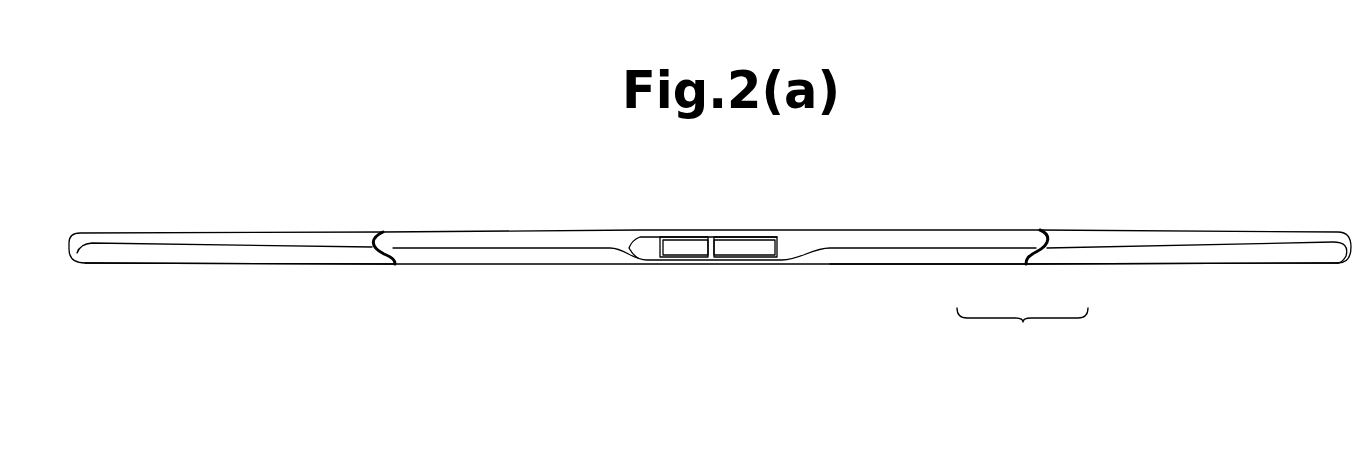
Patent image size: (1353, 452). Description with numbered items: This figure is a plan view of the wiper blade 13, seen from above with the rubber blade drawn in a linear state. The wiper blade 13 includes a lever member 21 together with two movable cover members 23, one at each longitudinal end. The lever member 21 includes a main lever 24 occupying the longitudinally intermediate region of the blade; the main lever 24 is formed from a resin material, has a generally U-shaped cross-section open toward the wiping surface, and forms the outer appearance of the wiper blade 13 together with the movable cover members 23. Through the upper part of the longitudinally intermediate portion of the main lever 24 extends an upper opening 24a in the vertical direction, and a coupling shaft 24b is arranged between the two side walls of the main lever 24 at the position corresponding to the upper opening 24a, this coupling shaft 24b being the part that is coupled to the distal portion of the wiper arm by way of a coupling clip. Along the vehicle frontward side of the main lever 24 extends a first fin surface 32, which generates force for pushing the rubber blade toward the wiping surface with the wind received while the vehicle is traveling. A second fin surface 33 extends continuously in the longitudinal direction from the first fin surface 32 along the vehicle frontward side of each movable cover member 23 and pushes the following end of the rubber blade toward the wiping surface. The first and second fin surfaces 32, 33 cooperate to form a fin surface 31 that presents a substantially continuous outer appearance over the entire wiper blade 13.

The wiper blade 13 is at (947, 193).
The lever member 21 is at (788, 228).
The movable cover member 23 is at (225, 232).
The main lever 24 is at (885, 235).
The upper opening 24a is at (734, 253).
The coupling shaft 24b is at (706, 247).
The fin surface 31 is at (1022, 332).
The first fin surface 32 is at (983, 257).
The second fin surface 33 is at (287, 258).